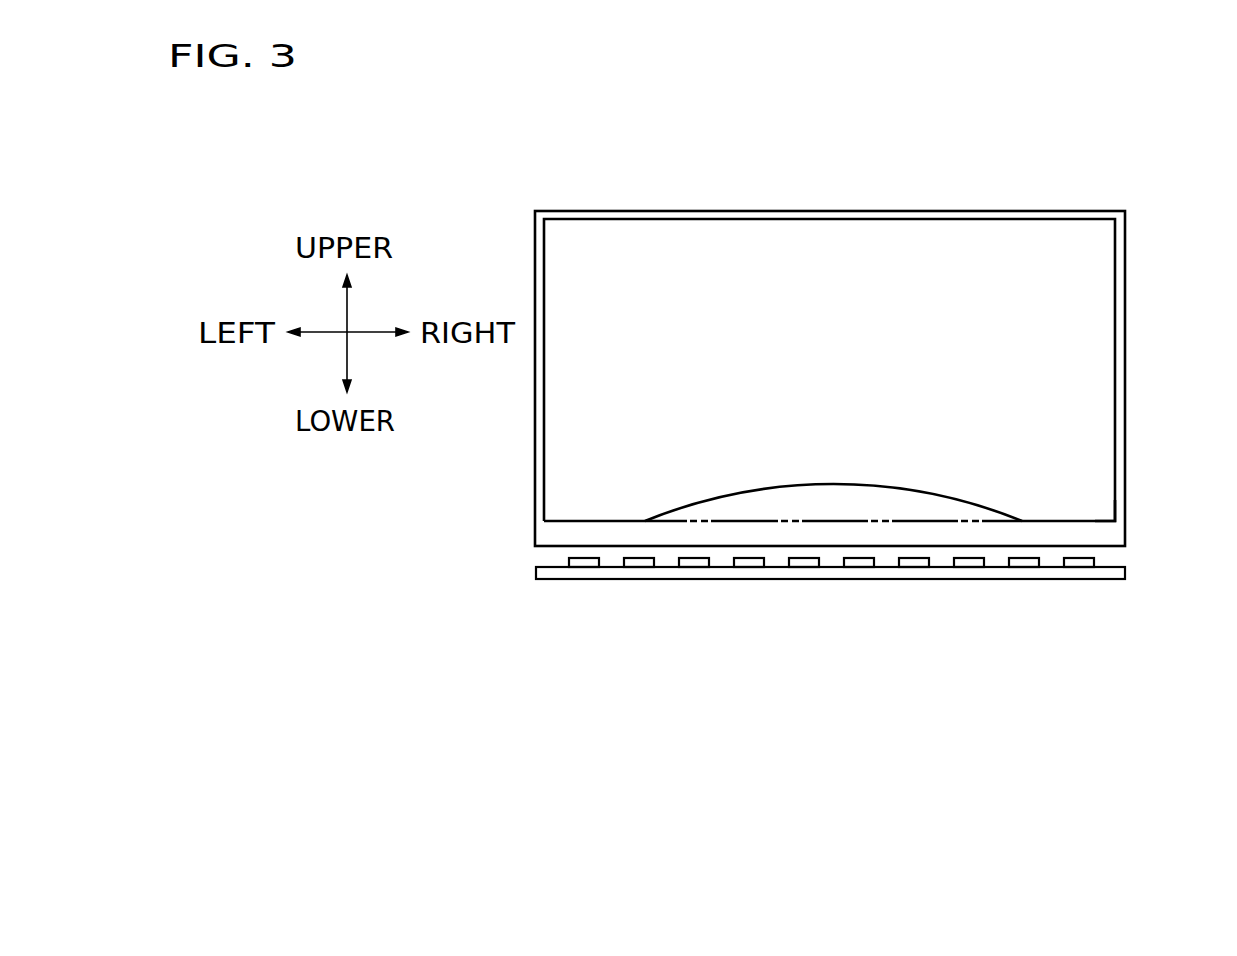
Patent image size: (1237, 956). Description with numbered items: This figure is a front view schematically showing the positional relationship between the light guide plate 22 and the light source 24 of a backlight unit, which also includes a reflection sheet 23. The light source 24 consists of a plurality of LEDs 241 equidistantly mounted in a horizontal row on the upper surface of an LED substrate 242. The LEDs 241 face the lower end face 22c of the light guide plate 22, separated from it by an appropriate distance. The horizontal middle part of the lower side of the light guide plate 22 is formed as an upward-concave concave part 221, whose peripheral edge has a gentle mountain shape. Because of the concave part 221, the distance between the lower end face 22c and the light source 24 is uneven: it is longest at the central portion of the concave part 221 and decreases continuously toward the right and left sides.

The reflection sheet 23 is at (1125, 302).
The light guide plate 22 is at (1103, 366).
The concave part 221 is at (833, 492).
The lower end face 22c is at (1086, 524).
The light source 24 is at (808, 647).
The LED substrate 242 is at (550, 573).
The LEDs 241 is at (637, 563).